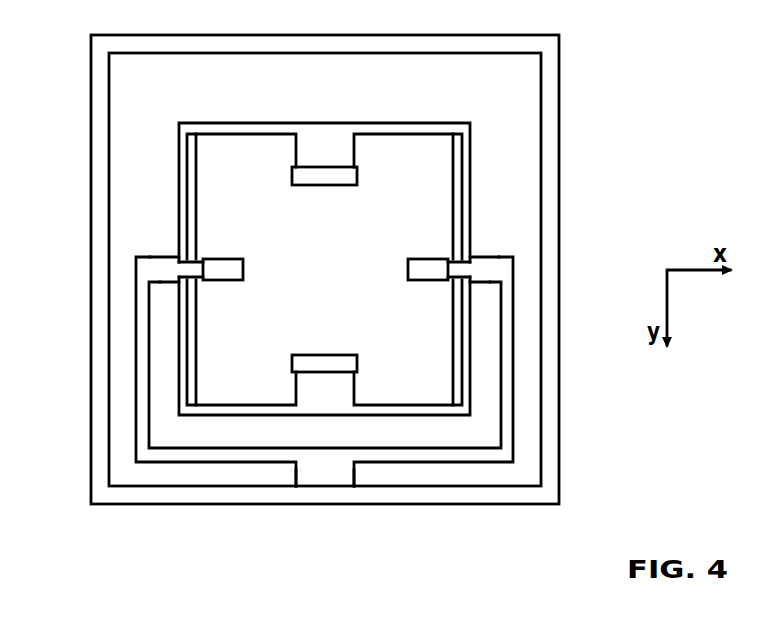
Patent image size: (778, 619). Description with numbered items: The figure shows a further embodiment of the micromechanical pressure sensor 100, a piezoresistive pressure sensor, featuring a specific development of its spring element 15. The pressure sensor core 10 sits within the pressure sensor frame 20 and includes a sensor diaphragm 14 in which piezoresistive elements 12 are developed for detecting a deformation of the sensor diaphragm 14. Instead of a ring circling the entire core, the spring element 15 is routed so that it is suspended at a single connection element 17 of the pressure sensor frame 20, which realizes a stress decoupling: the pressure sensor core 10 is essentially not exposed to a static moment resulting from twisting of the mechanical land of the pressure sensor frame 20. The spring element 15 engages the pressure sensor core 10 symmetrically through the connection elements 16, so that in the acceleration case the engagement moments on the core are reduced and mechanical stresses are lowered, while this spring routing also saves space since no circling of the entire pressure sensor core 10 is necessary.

The micromechanical pressure sensor 100 is at (97, 522).
The pressure sensor frame 20 is at (560, 126).
The pressure sensor core 10 is at (178, 190).
The piezoresistive elements 12 is at (292, 177).
The sensor diaphragm 14 is at (339, 284).
The spring element 15 is at (514, 412).
The connection element 16 is at (158, 257).
The connection element 17 is at (354, 473).